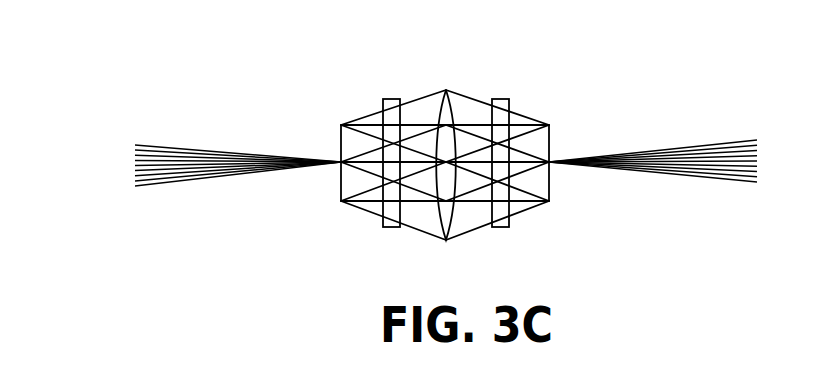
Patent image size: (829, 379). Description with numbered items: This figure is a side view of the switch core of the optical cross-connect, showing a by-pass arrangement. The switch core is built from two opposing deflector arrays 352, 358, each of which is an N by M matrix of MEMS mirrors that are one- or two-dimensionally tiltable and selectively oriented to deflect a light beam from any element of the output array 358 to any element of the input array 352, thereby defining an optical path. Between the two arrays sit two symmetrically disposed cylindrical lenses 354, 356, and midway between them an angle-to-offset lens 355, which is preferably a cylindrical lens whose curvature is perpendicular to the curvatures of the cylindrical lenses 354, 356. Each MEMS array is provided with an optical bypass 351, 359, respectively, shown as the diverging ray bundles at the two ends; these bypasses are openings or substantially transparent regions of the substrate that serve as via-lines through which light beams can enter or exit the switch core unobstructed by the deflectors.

The optical bypass 351 is at (554, 160).
The deflector array 352 is at (552, 125).
The cylindrical lens 354 is at (499, 99).
The angle-to-offset (ATO) lens 355 is at (447, 90).
The cylindrical lens 356 is at (393, 99).
The deflector array 358 is at (338, 125).
The optical bypass 359 is at (336, 159).